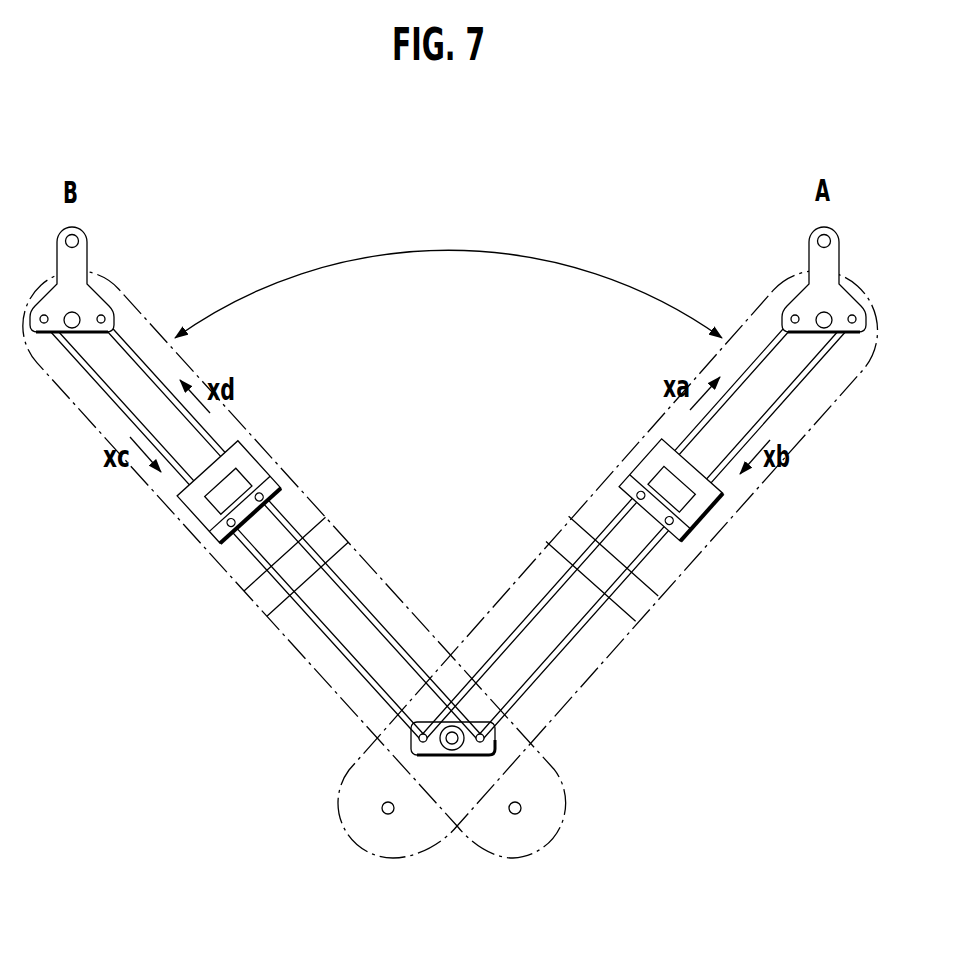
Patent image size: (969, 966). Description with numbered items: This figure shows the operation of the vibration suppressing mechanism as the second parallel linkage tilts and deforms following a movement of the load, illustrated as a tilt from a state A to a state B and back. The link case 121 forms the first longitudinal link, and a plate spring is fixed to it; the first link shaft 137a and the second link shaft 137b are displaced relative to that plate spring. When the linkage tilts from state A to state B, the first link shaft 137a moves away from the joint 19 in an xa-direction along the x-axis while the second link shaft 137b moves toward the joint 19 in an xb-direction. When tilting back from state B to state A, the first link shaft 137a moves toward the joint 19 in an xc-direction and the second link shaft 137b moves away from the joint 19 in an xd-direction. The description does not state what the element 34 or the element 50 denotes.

The connecting link 34 is at (808, 265).
The first link shaft 137a is at (772, 338).
The second link shaft 137b is at (808, 374).
The slider 50 is at (710, 520).
The link case 121 is at (593, 663).
The joint 19 is at (443, 757).